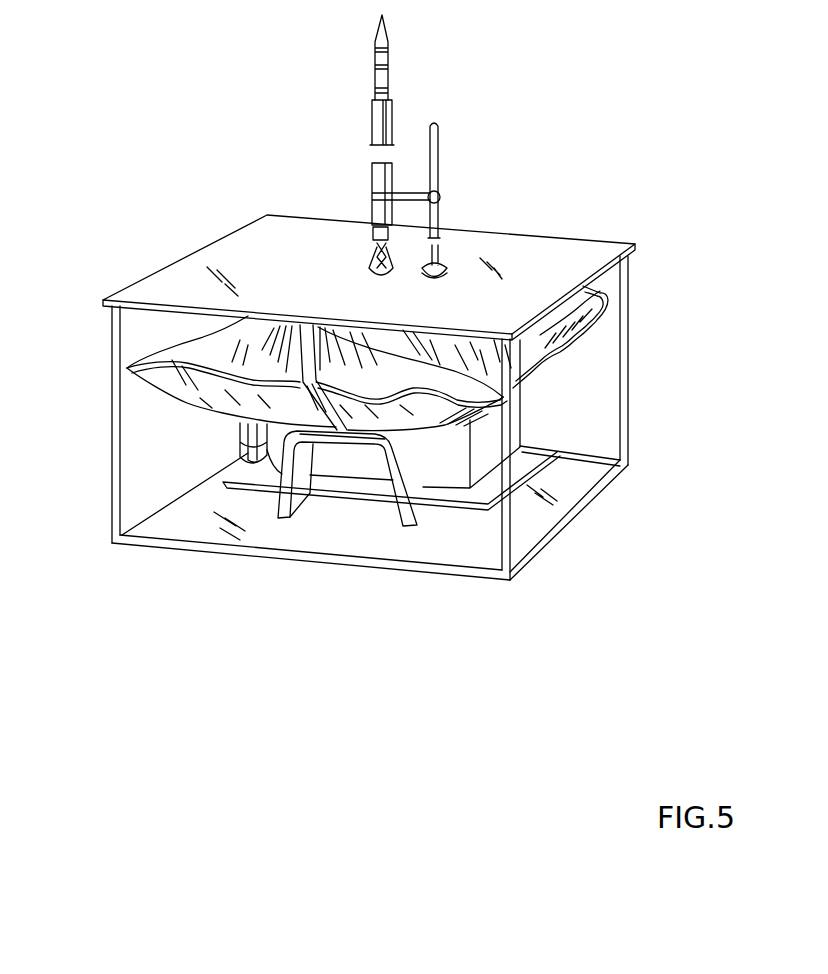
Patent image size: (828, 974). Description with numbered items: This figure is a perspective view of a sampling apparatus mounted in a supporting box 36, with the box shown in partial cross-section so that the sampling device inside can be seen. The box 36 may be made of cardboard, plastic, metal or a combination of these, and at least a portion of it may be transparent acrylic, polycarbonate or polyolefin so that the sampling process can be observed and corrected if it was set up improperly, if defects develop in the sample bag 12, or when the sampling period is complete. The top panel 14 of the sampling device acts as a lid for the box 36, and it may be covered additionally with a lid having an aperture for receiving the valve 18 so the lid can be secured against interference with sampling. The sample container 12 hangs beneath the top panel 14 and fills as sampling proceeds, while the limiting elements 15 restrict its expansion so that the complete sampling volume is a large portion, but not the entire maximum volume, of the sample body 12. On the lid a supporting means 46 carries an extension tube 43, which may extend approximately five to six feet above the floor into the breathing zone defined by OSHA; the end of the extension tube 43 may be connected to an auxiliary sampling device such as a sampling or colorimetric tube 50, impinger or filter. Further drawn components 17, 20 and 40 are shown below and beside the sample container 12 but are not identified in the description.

The sample container 12 is at (115, 333).
The top panel 14 is at (150, 285).
The limiting elements 15 is at (293, 318).
The support bracket 17 is at (416, 526).
The valve 18 is at (368, 255).
The collar cylinder 20 is at (277, 441).
The box 36 is at (628, 312).
The holder sleeve 40 is at (368, 183).
The extension tube 43 is at (378, 128).
The supporting means 46 is at (440, 162).
The sampling or colorimetric tube 50 is at (392, 72).